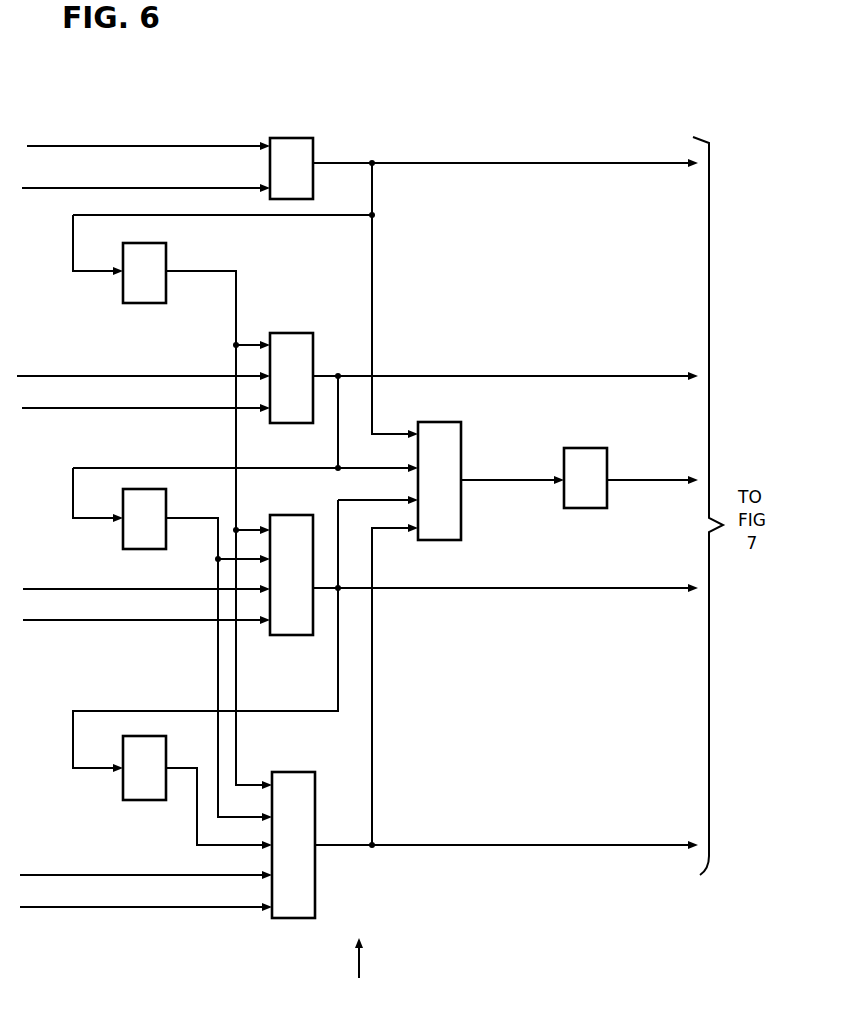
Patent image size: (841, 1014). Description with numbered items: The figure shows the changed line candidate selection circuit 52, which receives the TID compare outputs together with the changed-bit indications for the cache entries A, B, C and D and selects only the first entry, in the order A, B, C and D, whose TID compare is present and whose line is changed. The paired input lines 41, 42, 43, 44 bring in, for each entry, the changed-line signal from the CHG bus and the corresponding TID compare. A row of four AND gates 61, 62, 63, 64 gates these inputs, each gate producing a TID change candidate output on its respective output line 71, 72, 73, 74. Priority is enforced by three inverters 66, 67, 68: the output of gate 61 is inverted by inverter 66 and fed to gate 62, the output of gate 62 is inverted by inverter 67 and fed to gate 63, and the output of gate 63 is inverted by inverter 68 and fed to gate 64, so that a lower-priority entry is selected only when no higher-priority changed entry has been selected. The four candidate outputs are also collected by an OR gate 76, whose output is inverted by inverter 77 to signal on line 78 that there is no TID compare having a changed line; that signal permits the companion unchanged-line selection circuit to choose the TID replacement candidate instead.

The TID compare output A 41 is at (42, 190).
The TID compare output B 42 is at (63, 409).
The TID compare output C 43 is at (67, 621).
The TID compare output D 44 is at (97, 908).
The changed line candidate selection circuit 52 is at (374, 1011).
The AND gate 61 is at (303, 138).
The AND gate 62 is at (293, 333).
The AND gate 63 is at (297, 635).
The AND gate 64 is at (305, 772).
The inverter 66 is at (167, 253).
The inverter 67 is at (168, 501).
The inverter 68 is at (168, 747).
The TID change candidate A output line 71 is at (622, 165).
The TID change candidate B output line 72 is at (577, 378).
The TID change candidate C output line 73 is at (608, 589).
The TID change candidate D output line 74 is at (587, 846).
The OR gate 76 is at (463, 430).
The inverter 77 is at (602, 448).
The no change candidate line 78 is at (618, 485).